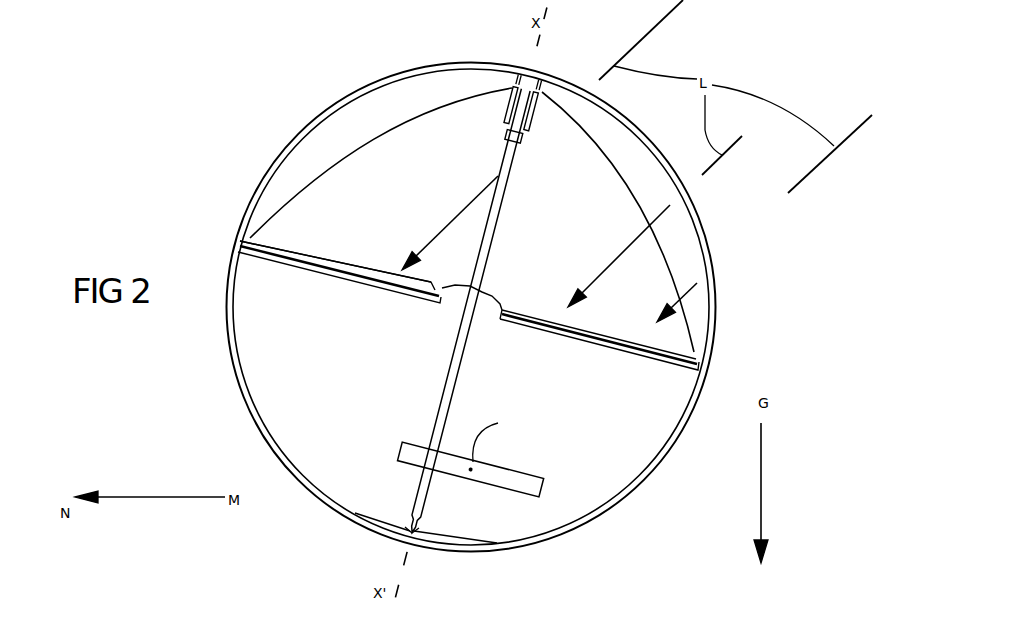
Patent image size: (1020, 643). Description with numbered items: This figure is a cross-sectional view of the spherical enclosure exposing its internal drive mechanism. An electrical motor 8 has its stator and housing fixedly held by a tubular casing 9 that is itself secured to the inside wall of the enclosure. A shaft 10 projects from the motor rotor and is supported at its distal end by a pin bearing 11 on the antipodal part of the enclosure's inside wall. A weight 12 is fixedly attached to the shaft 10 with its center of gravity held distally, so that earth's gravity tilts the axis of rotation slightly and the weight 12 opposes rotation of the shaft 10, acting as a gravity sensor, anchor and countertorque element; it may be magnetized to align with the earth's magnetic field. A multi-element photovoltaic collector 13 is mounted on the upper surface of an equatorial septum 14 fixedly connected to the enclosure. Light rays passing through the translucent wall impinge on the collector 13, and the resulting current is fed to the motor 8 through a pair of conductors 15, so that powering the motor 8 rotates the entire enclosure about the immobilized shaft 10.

The electrical motor 8 is at (528, 142).
The tubular casing 9 is at (506, 112).
The shaft 10 is at (444, 391).
The pin bearing 11 is at (412, 531).
The weight 12 is at (520, 470).
The photovoltaic collector 13 is at (337, 259).
The equatorial septum 14 is at (362, 283).
The conductors 15 is at (362, 146).